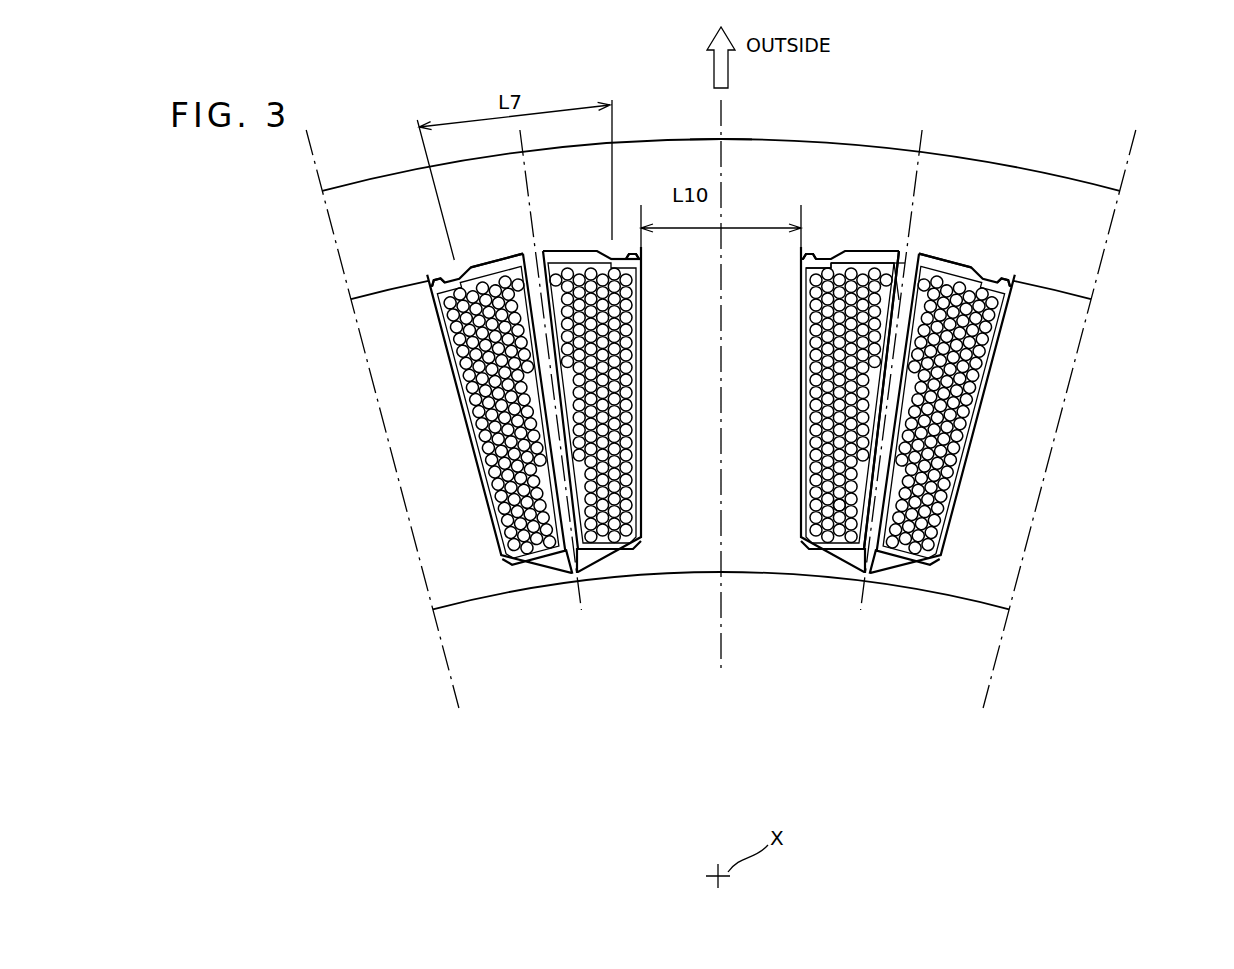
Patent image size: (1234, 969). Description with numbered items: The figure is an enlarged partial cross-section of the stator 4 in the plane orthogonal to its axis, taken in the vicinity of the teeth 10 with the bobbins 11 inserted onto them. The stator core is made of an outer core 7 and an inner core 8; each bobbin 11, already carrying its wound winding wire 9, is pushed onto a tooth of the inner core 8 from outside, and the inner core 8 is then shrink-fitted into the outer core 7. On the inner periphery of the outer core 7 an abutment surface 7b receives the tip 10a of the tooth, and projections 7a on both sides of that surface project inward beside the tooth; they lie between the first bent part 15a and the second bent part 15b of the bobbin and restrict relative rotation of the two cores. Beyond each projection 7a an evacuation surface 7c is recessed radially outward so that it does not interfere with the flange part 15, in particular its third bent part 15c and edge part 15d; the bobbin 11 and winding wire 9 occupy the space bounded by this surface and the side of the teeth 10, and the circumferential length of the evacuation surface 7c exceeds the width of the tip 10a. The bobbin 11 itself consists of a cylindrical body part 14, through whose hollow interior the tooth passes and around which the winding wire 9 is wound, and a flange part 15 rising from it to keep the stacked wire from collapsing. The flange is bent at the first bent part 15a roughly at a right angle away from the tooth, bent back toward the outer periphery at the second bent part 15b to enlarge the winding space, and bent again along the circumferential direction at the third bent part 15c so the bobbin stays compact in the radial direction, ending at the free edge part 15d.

The stator 4 is at (1097, 115).
The outer core 7 is at (1090, 233).
The projection 7a is at (447, 277).
The abutment surface 7b is at (747, 250).
The evacuation surface 7c is at (533, 253).
The inner core 8 is at (1030, 447).
The winding wire 9 is at (841, 512).
The teeth 10 is at (755, 535).
The tip of the teeth 10a is at (691, 258).
The bobbin 11 is at (850, 354).
The cylindrical body part 14 is at (828, 396).
The flange part 15 is at (885, 254).
The first bent part 15a is at (815, 259).
The second bent part 15b is at (818, 300).
The third bent part 15c is at (852, 256).
The edge part 15d is at (907, 259).